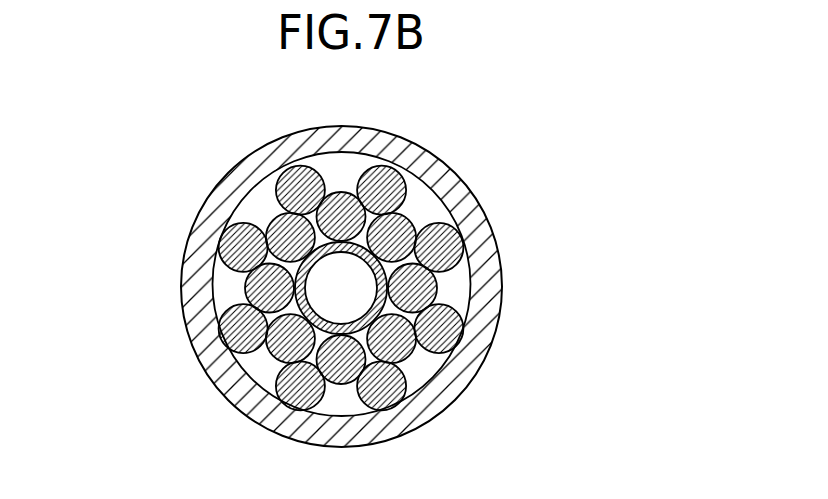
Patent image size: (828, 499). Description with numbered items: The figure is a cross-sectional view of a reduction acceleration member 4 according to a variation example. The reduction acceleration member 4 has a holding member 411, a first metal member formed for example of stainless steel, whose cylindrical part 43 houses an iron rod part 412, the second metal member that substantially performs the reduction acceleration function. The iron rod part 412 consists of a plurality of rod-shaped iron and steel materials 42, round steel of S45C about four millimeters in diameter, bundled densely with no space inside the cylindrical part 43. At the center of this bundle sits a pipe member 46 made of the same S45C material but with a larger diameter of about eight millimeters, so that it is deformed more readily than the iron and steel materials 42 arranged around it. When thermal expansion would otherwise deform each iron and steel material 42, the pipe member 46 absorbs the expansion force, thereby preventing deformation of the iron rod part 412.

The reduction acceleration member 4 is at (399, 286).
The holding member 411 is at (483, 205).
The iron rod part 412 is at (452, 292).
The iron and steel material 42 is at (386, 178).
The cylindrical part 43 is at (399, 278).
The pipe member 46 is at (303, 323).